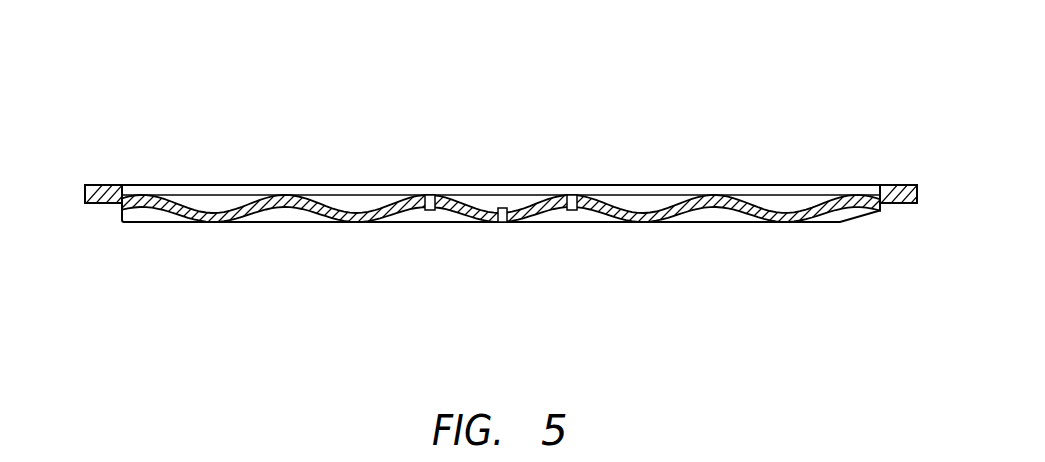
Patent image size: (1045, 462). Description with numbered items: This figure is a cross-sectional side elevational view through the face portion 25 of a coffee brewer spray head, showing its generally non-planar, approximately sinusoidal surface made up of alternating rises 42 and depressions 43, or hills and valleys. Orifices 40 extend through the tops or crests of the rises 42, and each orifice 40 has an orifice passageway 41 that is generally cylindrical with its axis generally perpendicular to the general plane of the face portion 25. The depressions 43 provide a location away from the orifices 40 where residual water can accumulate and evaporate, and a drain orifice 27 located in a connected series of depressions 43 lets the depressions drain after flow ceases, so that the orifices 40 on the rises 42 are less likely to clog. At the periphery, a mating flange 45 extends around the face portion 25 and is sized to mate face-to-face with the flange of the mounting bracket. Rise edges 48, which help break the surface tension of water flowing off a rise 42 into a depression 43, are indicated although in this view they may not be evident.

The face portion 25 is at (528, 284).
The drain orifice 27 is at (500, 222).
The orifice 40 is at (430, 186).
The orifice passageway 41 is at (433, 222).
The rise 42 is at (288, 185).
The depression 43 is at (222, 185).
The mating flange 45 is at (103, 185).
The rise edge 48 is at (412, 186).